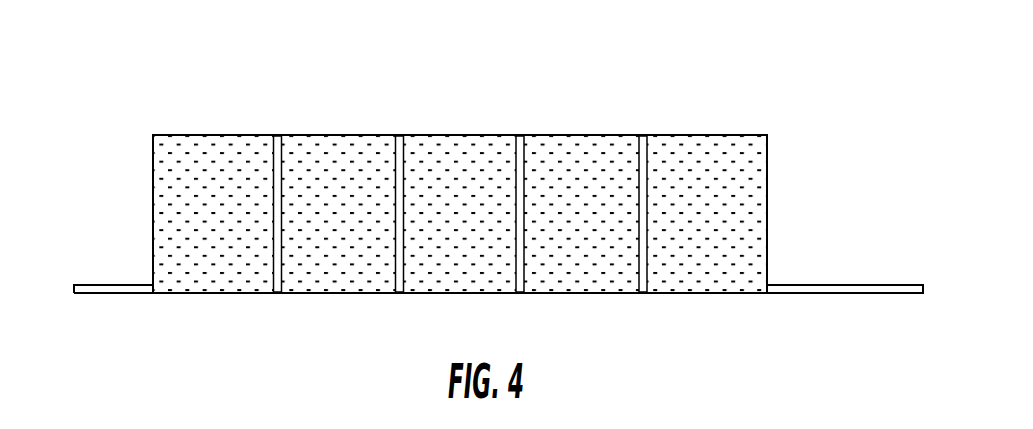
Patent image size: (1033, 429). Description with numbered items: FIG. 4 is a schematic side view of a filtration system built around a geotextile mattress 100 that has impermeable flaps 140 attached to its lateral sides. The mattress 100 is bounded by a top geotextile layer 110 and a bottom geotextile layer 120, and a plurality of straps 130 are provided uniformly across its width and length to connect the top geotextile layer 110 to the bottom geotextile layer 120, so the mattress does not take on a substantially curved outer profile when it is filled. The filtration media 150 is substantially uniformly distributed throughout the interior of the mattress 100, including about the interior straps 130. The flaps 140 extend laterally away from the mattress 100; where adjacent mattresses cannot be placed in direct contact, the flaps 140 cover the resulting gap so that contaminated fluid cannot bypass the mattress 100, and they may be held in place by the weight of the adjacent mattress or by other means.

The geotextile mattress 100 is at (602, 90).
The top geotextile layer 110 is at (362, 135).
The bottom geotextile layer 120 is at (345, 293).
The straps 130 is at (638, 267).
The impermeable flaps 140 is at (125, 273).
The filtration media 150 is at (462, 167).